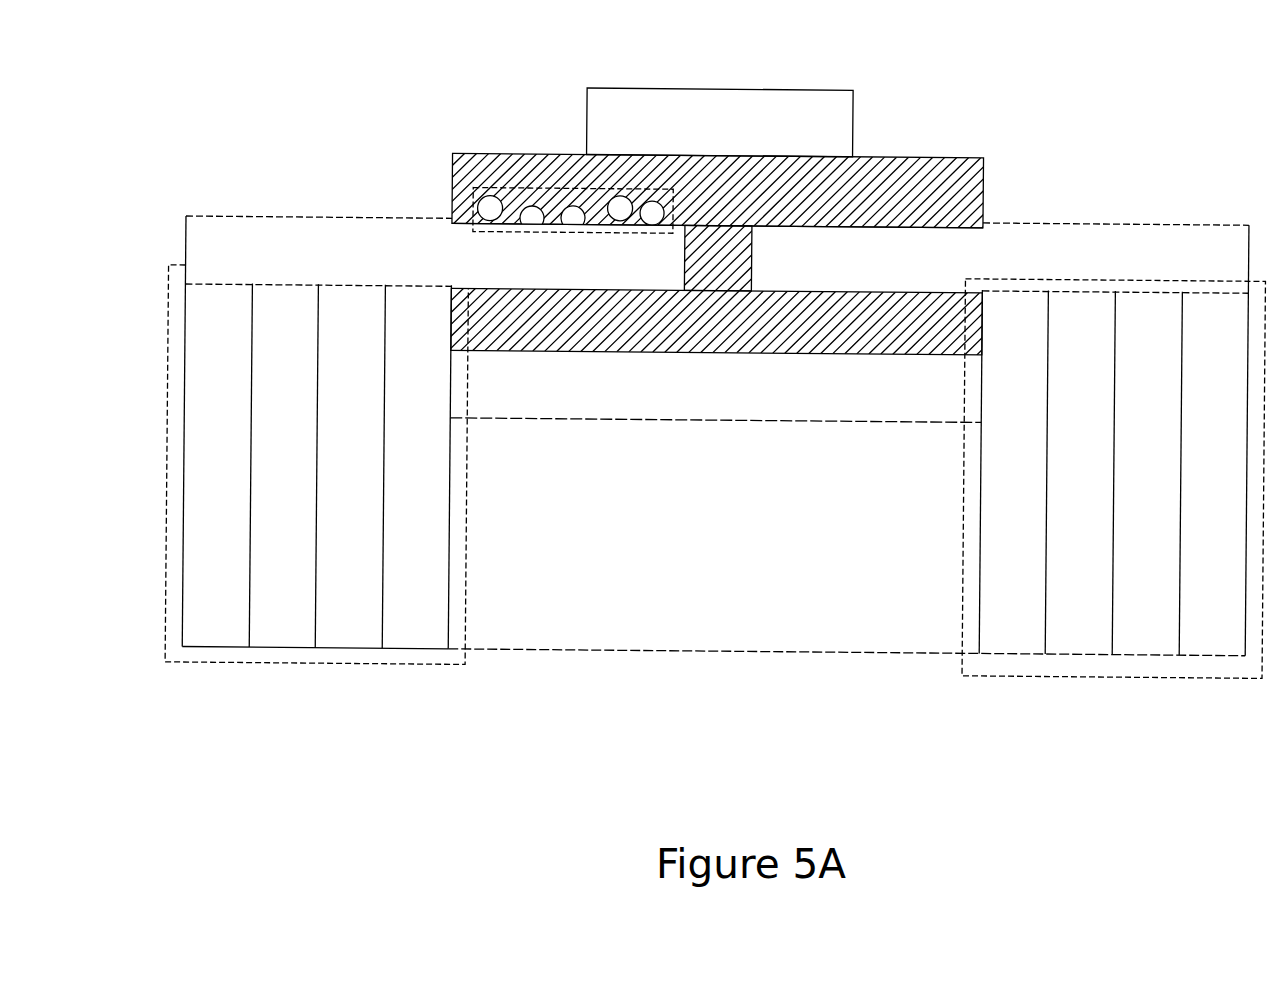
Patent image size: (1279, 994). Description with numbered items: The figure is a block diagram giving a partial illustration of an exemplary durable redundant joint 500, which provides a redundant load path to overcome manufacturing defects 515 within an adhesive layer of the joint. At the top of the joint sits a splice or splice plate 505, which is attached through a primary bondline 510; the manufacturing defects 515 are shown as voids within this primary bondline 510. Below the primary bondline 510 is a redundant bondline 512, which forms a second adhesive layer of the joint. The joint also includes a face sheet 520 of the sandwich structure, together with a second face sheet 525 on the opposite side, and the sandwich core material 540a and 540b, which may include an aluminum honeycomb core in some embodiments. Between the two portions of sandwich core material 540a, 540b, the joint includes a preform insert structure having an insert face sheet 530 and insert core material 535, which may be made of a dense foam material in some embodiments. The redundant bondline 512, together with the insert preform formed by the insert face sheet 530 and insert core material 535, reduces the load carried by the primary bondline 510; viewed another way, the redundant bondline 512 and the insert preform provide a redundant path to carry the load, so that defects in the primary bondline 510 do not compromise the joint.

The durable redundant joint 500 is at (715, 370).
The splice plate 505 is at (836, 106).
The primary bondline 510 is at (557, 166).
The redundant bondline 512 is at (557, 333).
The manufacturing defects 515 is at (475, 215).
The face sheet 520 is at (418, 240).
The right side plate 525 is at (1131, 260).
The insert face sheet 530 is at (868, 389).
The insert core material 535 is at (768, 620).
The sandwich core material 540a is at (469, 467).
The sandwich core material 540b is at (965, 480).